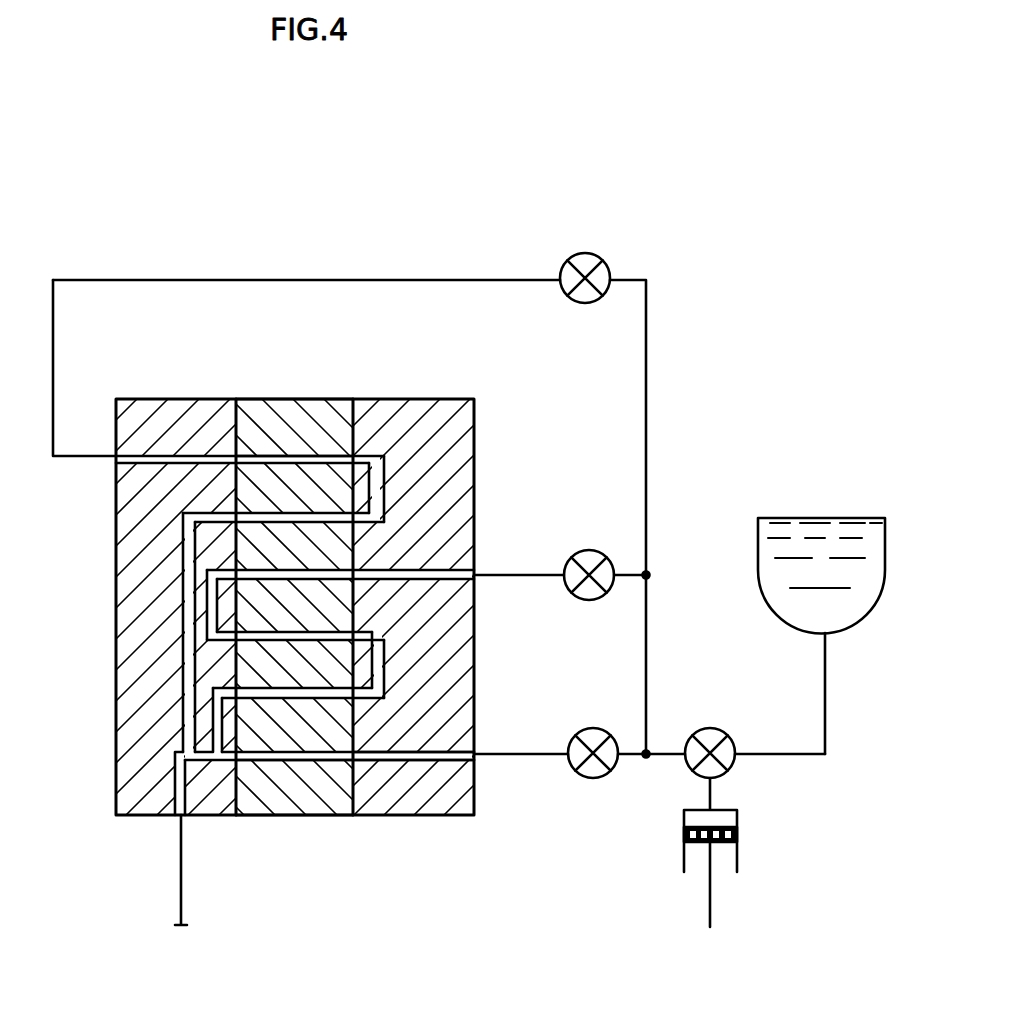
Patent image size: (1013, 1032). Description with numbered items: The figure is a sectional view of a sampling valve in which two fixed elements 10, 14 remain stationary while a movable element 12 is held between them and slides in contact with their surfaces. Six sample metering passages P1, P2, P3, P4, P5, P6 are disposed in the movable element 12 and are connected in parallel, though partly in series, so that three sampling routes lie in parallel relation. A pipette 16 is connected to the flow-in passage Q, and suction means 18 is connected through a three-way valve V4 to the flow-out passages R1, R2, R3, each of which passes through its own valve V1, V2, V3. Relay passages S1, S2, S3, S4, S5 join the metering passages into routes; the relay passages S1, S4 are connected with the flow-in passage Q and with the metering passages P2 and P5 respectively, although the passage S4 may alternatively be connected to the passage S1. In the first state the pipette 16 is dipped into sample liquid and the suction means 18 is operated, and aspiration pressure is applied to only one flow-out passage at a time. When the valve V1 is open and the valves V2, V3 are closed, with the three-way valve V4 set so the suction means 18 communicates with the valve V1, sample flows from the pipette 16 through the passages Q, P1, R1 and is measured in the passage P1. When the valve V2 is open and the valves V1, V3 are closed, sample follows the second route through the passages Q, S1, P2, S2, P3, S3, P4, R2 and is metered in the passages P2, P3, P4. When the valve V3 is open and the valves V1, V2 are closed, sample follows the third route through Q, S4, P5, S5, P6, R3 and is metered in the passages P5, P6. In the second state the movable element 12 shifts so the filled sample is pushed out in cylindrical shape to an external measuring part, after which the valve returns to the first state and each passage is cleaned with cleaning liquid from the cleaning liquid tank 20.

The fixed element 10 is at (165, 398).
The movable element 12 is at (320, 398).
The fixed element 14 is at (418, 398).
The pipette 16 is at (181, 884).
The suction means 18 is at (737, 852).
The cleaning liquid tank 20 is at (808, 518).
The metering passage P1 is at (262, 757).
The metering passage P2 is at (303, 700).
The metering passage P3 is at (287, 640).
The metering passage P4 is at (250, 566).
The metering passage P5 is at (268, 517).
The metering passage P6 is at (265, 398).
The relay passage S1 is at (213, 728).
The relay passage S2 is at (383, 690).
The relay passage S3 is at (212, 618).
The relay passage S4 is at (187, 545).
The relay passage S5 is at (387, 488).
The flow-out passage R1 is at (440, 757).
The flow-out passage R2 is at (423, 573).
The flow-out passage R3 is at (162, 456).
The flow-in passage Q is at (177, 780).
The valve V1 is at (595, 778).
The valve V2 is at (590, 600).
The valve V3 is at (585, 303).
The three-way valve V4 is at (738, 712).